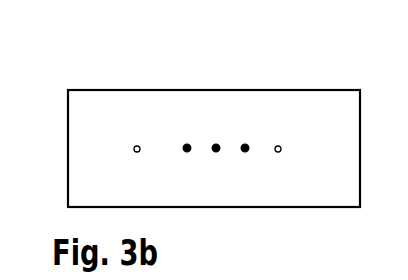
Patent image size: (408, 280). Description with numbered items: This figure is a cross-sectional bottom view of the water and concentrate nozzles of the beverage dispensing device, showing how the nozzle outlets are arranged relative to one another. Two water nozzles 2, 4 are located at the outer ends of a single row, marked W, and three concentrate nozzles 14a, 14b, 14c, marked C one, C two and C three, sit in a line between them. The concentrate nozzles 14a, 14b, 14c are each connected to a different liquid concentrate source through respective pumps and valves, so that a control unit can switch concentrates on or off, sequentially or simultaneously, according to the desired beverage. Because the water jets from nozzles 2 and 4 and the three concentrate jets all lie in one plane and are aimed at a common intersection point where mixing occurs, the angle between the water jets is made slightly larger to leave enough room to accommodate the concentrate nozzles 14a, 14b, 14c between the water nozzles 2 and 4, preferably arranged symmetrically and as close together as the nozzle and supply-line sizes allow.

The water nozzle 2 is at (134, 149).
The water nozzle 4 is at (281, 152).
The concentrate nozzle 14a is at (187, 148).
The concentrate nozzle 14b is at (216, 148).
The concentrate nozzle 14c is at (245, 148).